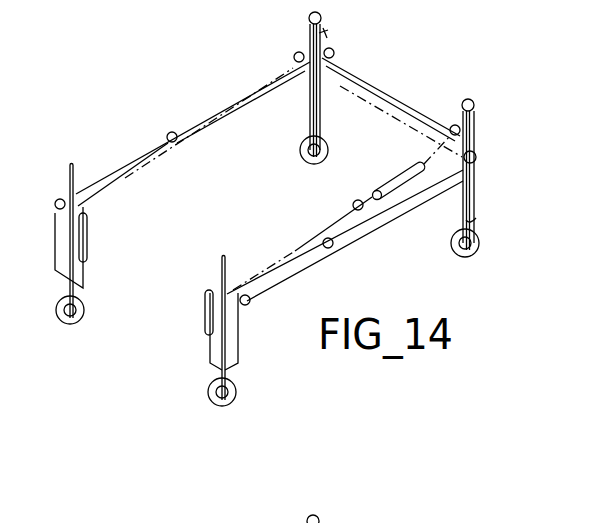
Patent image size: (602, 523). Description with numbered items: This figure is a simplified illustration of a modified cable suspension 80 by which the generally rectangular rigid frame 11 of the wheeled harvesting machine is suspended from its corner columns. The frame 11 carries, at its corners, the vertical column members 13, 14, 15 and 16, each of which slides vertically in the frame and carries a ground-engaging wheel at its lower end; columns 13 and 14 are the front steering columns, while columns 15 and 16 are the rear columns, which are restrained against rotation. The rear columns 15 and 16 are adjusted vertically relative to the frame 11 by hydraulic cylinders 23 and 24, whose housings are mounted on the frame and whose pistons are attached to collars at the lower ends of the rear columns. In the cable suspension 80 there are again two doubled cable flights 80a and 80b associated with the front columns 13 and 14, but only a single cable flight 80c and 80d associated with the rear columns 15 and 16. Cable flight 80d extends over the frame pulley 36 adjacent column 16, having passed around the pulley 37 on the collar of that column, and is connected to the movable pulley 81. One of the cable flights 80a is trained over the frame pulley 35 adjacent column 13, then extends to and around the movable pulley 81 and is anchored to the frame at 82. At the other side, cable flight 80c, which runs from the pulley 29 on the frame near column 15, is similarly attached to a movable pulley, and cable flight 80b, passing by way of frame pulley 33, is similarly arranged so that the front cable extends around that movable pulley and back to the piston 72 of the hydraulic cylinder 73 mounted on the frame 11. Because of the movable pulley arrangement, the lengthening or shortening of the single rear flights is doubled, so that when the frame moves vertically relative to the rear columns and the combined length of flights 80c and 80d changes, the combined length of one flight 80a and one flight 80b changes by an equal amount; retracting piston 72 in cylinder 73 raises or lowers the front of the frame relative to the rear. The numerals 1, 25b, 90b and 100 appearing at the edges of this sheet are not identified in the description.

The cart 1 is at (474, 208).
The rigid frame 11 is at (232, 108).
The column member 13 is at (310, 118).
The column member 14 is at (9, 107).
The column member 15 is at (229, 380).
The column member 16 is at (83, 289).
The hydraulic cylinder 23 is at (208, 314).
The hydraulic cylinder 24 is at (84, 242).
The member 25b is at (0, 52).
The pulley 29 is at (251, 300).
The frame pulley 33 is at (334, 53).
The pulley 35 is at (294, 57).
The pulley 36 is at (55, 205).
The pulley 37 is at (60, 273).
The piston 72 is at (354, 205).
The hydraulic cylinder 73 is at (402, 181).
The cable suspension 80 is at (420, 207).
The cable flight 80a is at (340, 24).
The cable flight 80b is at (462, 117).
The cable flight 80c is at (240, 350).
The cable flight 80d is at (58, 275).
The movable pulley 81 is at (166, 137).
The anchor 82 is at (328, 248).
The member 90b is at (16, 445).
The wheel 100 is at (341, 519).